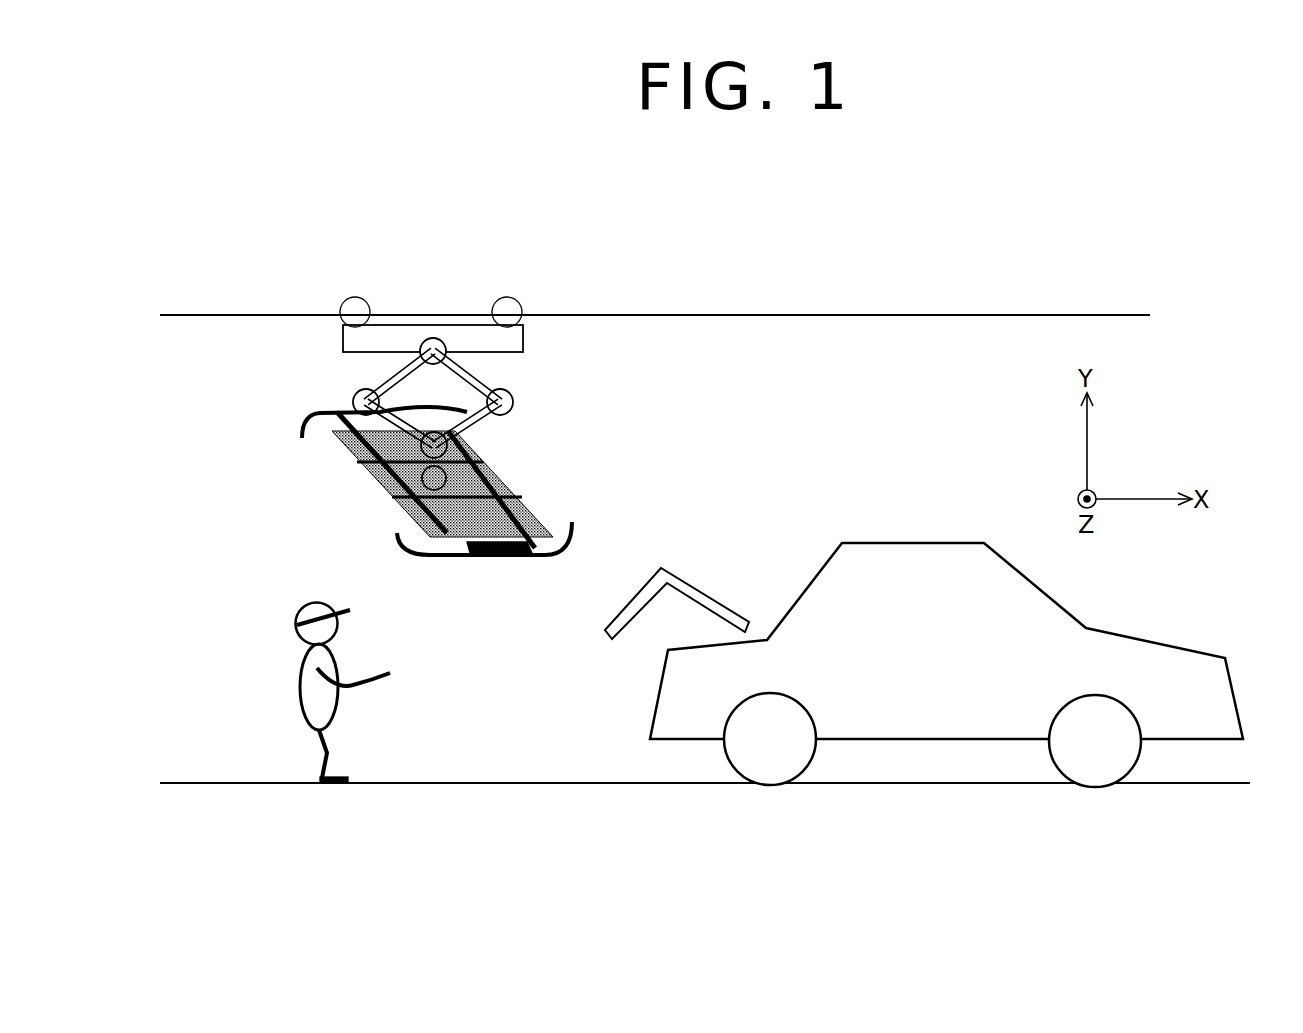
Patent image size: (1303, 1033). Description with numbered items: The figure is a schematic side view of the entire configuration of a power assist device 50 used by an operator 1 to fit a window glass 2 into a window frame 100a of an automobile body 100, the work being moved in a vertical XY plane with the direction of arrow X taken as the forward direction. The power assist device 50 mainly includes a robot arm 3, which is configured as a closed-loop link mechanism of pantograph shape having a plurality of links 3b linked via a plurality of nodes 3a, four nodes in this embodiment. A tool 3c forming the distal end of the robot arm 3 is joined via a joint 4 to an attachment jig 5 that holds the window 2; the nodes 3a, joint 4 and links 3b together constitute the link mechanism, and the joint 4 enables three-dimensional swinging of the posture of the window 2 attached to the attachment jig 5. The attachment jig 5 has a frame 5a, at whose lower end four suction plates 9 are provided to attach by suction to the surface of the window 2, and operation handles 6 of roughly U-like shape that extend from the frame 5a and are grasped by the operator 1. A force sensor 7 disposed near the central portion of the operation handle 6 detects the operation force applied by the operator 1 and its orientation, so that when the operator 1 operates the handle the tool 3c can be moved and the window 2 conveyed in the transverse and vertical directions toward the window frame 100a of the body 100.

The operator 1 is at (298, 660).
The window glass 2 is at (393, 495).
The robot arm 3 is at (424, 366).
The node 3a is at (433, 338).
The link 3b is at (392, 375).
The tool 3c is at (380, 475).
The joint 4 is at (477, 477).
The attachment jig 5 is at (456, 480).
The frame 5a is at (507, 500).
The operation handle 6 is at (437, 557).
The force sensor 7 is at (493, 553).
The suction plate 9 is at (513, 498).
The power assist device 50 is at (490, 441).
The automobile body 100 is at (924, 622).
The window frame 100a is at (805, 586).